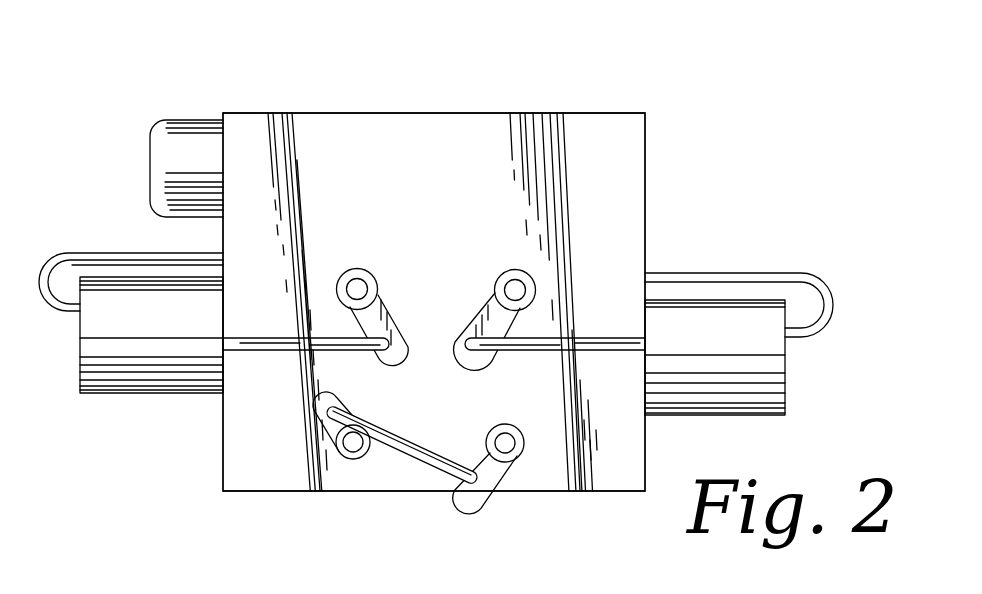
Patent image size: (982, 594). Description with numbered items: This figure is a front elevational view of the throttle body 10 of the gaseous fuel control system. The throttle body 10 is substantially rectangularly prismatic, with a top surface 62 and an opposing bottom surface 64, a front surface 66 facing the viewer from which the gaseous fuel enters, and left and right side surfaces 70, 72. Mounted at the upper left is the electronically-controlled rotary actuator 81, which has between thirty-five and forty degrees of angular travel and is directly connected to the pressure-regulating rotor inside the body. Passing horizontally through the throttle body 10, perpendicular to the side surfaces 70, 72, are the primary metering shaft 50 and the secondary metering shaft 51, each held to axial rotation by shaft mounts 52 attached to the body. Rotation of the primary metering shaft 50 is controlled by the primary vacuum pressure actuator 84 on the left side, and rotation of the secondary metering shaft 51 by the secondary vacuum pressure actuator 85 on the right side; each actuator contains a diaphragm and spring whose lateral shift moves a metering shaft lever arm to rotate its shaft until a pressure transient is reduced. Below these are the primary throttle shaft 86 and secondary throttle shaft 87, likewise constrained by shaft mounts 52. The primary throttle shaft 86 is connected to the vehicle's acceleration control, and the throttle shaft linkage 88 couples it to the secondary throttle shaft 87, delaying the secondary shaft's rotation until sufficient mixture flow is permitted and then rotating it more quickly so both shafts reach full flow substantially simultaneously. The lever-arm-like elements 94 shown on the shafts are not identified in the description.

The throttle body 10 is at (607, 155).
The primary metering shaft 50 is at (345, 288).
The secondary metering shaft 51 is at (527, 290).
The shaft mounts 52 is at (512, 272).
The top surface 62 is at (480, 113).
The bottom surface 64 is at (600, 491).
The front surface 66 is at (315, 113).
The left side surface 70 is at (223, 462).
The right side surface 72 is at (647, 450).
The electronically-controlled rotary actuator 81 is at (180, 153).
The primary vacuum pressure actuator 84 is at (78, 340).
The secondary vacuum pressure actuator 85 is at (785, 355).
The primary throttle shaft 86 is at (353, 442).
The secondary throttle shaft 87 is at (505, 443).
The throttle shaft linkage 88 is at (422, 462).
The locking rods 94 is at (240, 340).